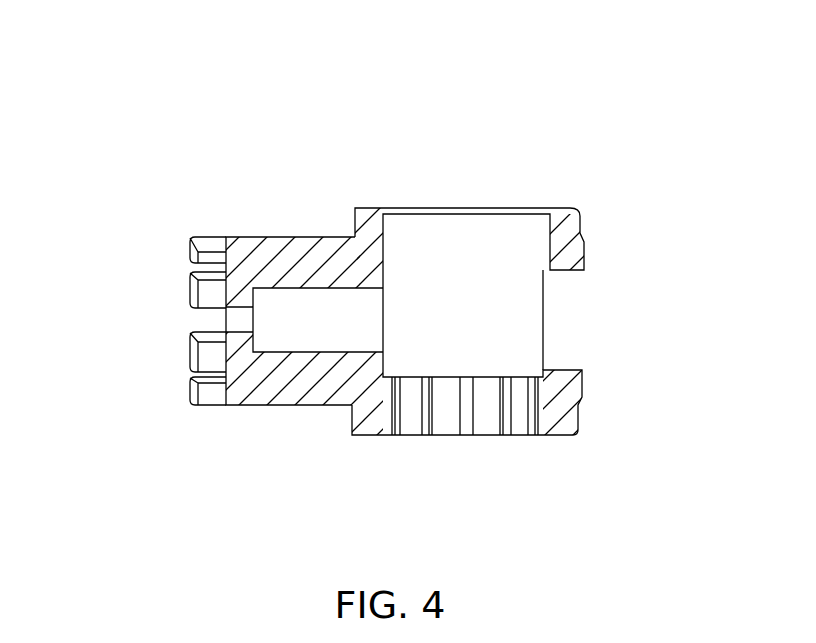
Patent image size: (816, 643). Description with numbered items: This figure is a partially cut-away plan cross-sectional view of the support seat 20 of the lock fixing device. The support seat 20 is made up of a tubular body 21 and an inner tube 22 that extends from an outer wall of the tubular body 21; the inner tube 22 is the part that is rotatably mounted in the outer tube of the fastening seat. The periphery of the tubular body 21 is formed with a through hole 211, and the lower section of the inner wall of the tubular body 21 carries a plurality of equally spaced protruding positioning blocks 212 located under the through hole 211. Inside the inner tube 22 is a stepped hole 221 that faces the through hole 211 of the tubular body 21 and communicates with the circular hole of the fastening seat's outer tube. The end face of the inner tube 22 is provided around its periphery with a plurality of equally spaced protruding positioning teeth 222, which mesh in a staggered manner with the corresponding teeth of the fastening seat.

The support seat 20 is at (449, 176).
The tubular body 21 is at (565, 210).
The through hole 211 is at (563, 323).
The positioning blocks 212 is at (489, 423).
The inner tube 22 is at (278, 247).
The stepped hole 221 is at (292, 337).
The positioning teeth 222 is at (193, 290).